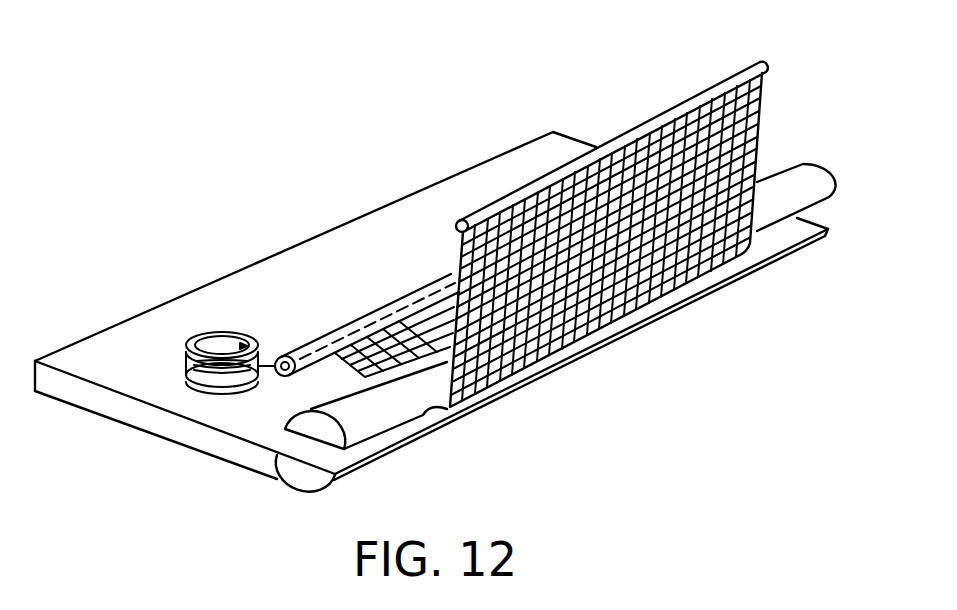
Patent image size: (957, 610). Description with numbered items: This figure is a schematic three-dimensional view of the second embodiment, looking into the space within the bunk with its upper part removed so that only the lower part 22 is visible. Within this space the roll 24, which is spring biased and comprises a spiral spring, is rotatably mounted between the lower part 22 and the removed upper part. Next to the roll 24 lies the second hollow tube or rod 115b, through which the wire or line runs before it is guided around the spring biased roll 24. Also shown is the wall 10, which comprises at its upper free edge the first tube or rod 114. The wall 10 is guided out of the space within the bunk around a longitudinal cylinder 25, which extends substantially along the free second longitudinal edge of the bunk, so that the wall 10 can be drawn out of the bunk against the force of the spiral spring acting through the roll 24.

The wall 10 is at (665, 230).
The lower part 22 is at (187, 432).
The roll 24 is at (213, 350).
The longitudinal cylinder 25 is at (361, 423).
The first tube or rod 114 is at (700, 92).
The second tube or rod 115b is at (370, 313).